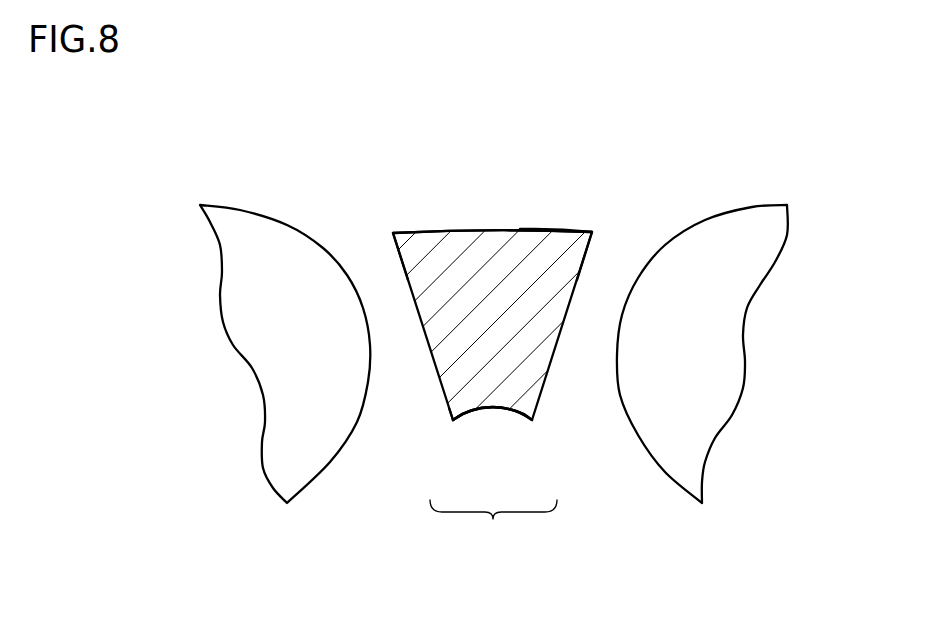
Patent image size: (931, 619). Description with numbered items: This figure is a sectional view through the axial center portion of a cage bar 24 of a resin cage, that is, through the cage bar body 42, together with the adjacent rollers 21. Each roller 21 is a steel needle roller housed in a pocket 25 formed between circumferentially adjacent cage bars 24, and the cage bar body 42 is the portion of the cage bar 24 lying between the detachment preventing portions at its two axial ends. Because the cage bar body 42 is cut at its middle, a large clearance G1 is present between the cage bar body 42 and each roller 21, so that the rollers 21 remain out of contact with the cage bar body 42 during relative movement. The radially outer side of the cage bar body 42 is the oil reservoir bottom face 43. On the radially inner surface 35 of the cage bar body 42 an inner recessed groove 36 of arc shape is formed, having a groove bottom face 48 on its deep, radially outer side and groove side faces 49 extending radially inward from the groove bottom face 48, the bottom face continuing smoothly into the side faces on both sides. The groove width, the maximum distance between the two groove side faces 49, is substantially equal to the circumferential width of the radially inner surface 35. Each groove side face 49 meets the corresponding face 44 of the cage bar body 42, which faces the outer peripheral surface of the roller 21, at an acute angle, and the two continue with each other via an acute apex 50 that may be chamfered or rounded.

The roller 21 is at (256, 206).
The cage bar 24 is at (545, 229).
The pocket 25 is at (363, 263).
The radially inner surface 35 is at (452, 421).
The inner recessed groove 36 is at (493, 481).
The cage bar body 42 is at (497, 245).
The oil reservoir bottom face 43 is at (447, 229).
The face of the cage bar body 44 is at (405, 280).
The groove bottom face 48 is at (493, 409).
The groove side face 49 is at (470, 417).
The acute apex 50 is at (453, 420).
The clearance G1 is at (402, 381).